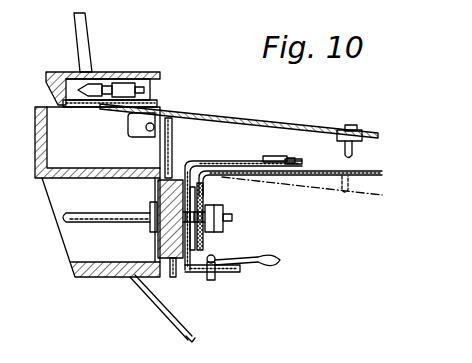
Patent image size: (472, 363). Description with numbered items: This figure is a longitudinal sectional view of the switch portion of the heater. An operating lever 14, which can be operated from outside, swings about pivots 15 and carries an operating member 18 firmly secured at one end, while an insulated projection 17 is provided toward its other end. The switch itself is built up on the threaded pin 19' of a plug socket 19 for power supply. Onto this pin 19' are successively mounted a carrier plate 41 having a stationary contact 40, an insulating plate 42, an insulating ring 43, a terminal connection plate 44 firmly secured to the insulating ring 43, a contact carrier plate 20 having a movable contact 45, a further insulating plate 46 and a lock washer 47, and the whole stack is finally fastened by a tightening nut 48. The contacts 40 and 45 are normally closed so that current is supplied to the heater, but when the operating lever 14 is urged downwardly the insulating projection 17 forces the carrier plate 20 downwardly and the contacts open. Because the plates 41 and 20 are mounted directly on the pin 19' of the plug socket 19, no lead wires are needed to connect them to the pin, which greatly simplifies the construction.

The operating lever 14 is at (222, 118).
The pivots 15 is at (130, 130).
The insulated projection 17 is at (352, 150).
The operating member 18 is at (72, 72).
The plug socket 19 is at (101, 227).
The threaded pin 19' is at (110, 210).
The contact carrier plate 20 is at (375, 175).
The stationary contact 40 is at (263, 161).
The carrier plate 41 is at (232, 160).
The insulating plate 42 is at (177, 262).
The insulating ring 43 is at (207, 205).
The terminal connection plate 44 is at (208, 270).
The movable contact 45 is at (285, 165).
The insulating plate 46 is at (204, 242).
The lock washer 47 is at (207, 235).
The tightening nut 48 is at (225, 218).